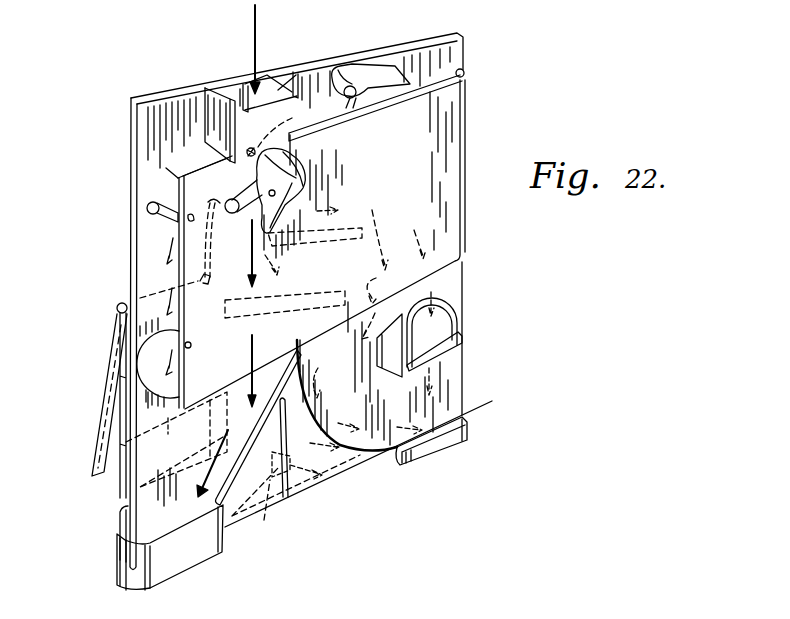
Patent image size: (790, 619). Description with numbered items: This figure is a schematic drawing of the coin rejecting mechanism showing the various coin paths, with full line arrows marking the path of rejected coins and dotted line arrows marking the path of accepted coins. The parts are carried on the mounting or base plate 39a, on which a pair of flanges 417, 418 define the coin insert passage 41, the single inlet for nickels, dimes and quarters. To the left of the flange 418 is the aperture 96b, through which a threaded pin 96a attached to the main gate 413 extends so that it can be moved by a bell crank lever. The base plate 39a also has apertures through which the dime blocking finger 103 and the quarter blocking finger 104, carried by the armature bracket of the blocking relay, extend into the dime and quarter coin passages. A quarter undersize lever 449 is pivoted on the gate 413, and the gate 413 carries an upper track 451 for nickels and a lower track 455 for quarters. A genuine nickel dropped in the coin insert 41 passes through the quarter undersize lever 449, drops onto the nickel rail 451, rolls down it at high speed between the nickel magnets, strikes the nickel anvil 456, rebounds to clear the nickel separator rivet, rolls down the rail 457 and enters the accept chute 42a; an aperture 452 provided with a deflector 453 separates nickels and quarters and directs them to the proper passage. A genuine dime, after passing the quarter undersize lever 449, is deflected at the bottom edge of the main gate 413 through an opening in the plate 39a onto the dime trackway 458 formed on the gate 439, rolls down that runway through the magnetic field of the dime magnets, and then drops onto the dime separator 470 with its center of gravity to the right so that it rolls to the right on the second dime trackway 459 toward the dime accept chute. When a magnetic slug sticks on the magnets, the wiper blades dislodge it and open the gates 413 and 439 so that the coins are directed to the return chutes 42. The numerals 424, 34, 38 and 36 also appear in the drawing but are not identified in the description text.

The coin insert passage 41 is at (246, 95).
The flange 417 is at (215, 110).
The flange 418 is at (279, 75).
The roller latch 424 is at (372, 73).
The quarter blocking finger 104 is at (375, 108).
The main gate 413 is at (172, 176).
The aperture 96b is at (150, 204).
The threaded pin 96a is at (155, 215).
The base plate 39a is at (148, 285).
The dime blocking finger 103 is at (172, 342).
The gate 439 is at (128, 398).
The dime trackway 458 is at (176, 439).
The return chute 42 is at (140, 538).
The quarter undersize lever 449 is at (305, 162).
The upper track 451 is at (348, 230).
The panel 34 is at (415, 229).
The lower track 455 is at (345, 285).
The panel portion 38 is at (382, 304).
The aperture 452 is at (460, 308).
The deflector 453 is at (462, 345).
The nickel anvil 456 is at (388, 355).
The accepted quarter trackway 457 is at (337, 427).
The post 36 is at (280, 452).
The accept passage 42a is at (462, 429).
The second dime trackway 459 is at (312, 470).
The dime separator 470 is at (272, 500).